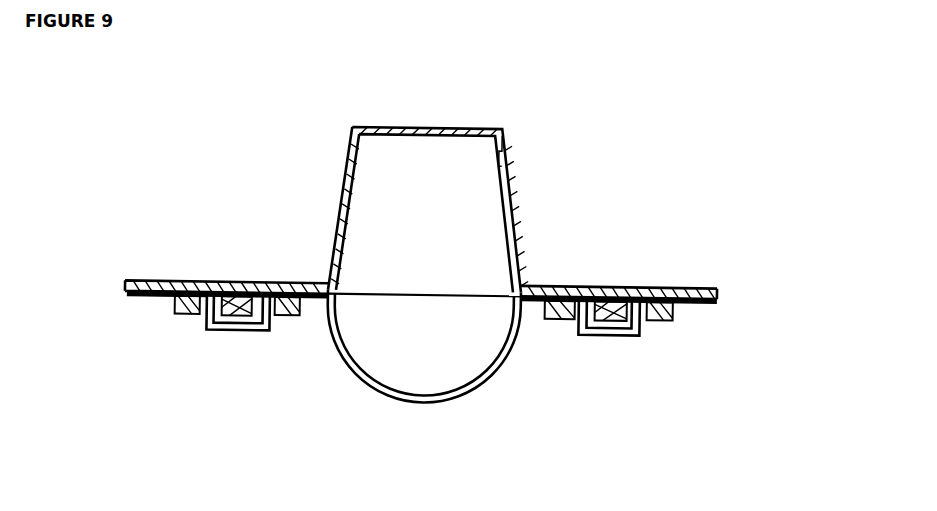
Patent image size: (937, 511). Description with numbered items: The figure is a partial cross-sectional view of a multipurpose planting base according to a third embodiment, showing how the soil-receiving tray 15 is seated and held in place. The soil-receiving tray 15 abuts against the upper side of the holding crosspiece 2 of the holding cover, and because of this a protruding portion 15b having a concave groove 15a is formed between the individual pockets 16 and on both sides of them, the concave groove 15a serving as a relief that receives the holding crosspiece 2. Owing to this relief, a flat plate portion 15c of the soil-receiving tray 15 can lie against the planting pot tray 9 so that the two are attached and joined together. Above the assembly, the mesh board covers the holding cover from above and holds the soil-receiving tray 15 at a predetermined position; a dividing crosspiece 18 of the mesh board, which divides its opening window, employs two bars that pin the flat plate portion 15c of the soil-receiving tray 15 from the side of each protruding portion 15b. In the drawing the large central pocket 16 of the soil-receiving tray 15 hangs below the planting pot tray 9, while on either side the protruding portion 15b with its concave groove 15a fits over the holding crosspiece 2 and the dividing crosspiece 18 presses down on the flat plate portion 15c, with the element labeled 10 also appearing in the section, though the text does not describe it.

The container body 10 is at (509, 200).
The planting pot tray 9 is at (623, 293).
The soil-receiving tray 15 is at (473, 392).
The pocket 16 is at (365, 383).
The concave groove 15a is at (248, 290).
The protruding portion 15b is at (225, 330).
The flat plate portion 15c is at (197, 296).
The holding crosspiece 2 is at (233, 290).
The dividing crosspiece 18 is at (180, 317).